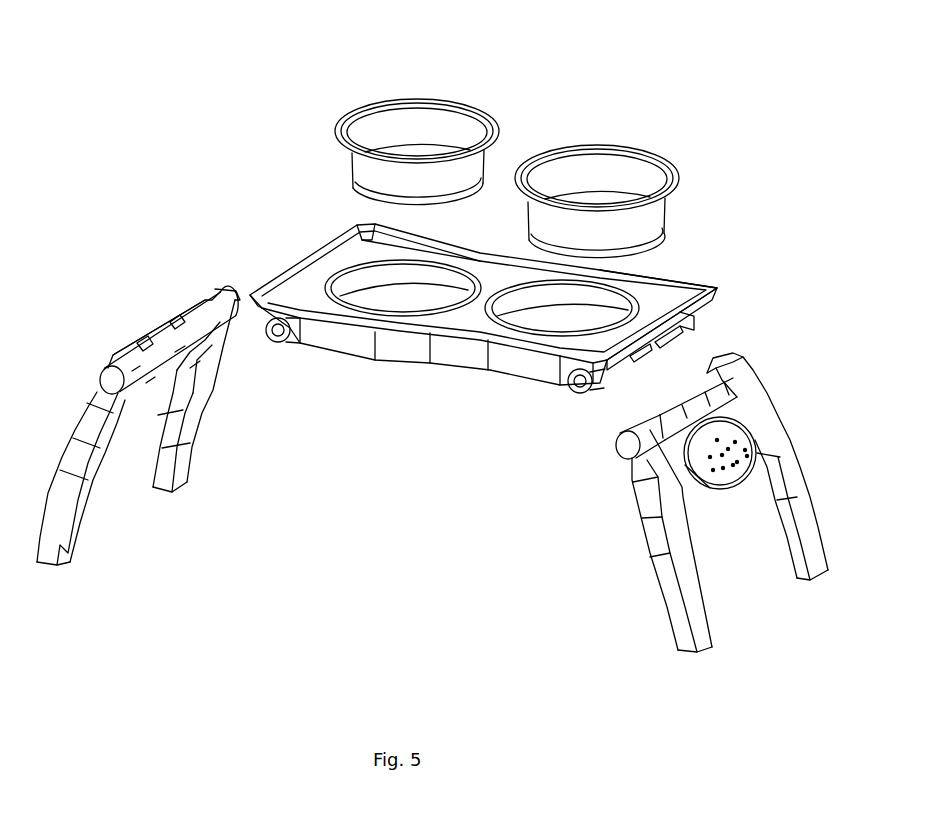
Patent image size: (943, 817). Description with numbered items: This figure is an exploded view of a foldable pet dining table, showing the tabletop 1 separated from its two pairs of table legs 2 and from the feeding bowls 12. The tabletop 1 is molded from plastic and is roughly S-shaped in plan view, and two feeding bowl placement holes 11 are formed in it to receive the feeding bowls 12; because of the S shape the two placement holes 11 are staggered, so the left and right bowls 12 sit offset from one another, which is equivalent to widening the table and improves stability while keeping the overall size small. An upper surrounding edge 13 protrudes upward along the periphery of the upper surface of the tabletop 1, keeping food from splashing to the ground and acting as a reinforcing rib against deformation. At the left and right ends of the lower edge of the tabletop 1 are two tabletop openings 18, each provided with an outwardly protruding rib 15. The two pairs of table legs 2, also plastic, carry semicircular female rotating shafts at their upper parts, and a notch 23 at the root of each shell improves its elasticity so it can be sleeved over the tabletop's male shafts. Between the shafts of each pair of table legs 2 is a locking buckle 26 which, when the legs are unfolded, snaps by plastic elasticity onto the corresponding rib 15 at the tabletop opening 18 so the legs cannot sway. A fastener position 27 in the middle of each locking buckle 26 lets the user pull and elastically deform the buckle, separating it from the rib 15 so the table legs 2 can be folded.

The tabletop 1 is at (330, 265).
The table legs 2 is at (755, 418).
The feeding bowl placement holes 11 is at (545, 323).
The feeding bowls 12 is at (595, 172).
The upper surrounding edge 13 is at (690, 285).
The ribs 15 is at (655, 352).
The tabletop openings 18 is at (672, 335).
The notch 23 is at (234, 298).
The locking buckle 26 is at (135, 335).
The fastener position 27 is at (146, 330).